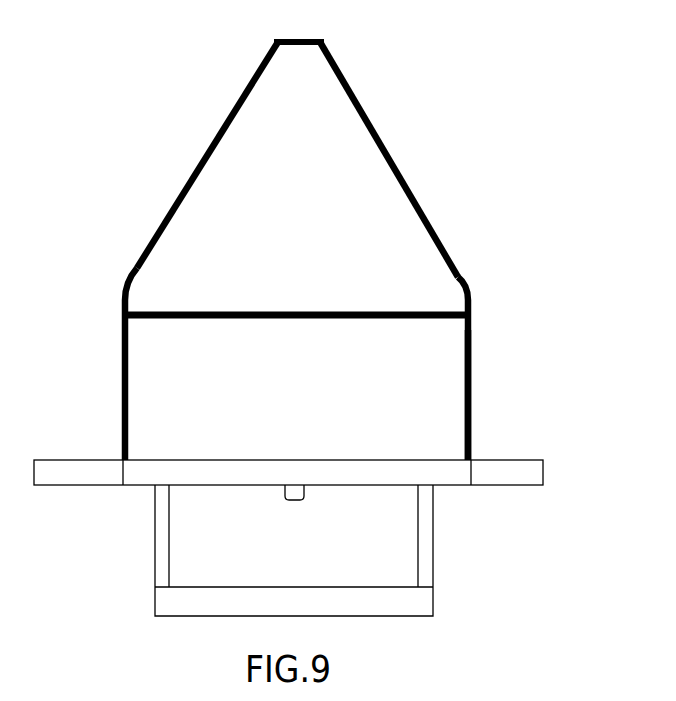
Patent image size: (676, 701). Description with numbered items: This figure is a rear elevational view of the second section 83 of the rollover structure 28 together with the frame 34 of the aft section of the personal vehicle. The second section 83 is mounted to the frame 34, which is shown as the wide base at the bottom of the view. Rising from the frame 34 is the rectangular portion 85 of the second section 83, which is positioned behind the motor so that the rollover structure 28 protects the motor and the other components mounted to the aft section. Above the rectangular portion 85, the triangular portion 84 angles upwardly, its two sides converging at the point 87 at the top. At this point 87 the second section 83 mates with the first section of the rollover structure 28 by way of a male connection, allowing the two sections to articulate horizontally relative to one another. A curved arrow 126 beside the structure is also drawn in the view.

The rollover structure 28 is at (168, 212).
The frame 34 is at (58, 478).
The second section 83 is at (210, 148).
The triangular portion 84 is at (388, 156).
The rectangular portion 85 is at (472, 392).
The point 87 is at (268, 56).
The rotation direction 126 is at (556, 550).